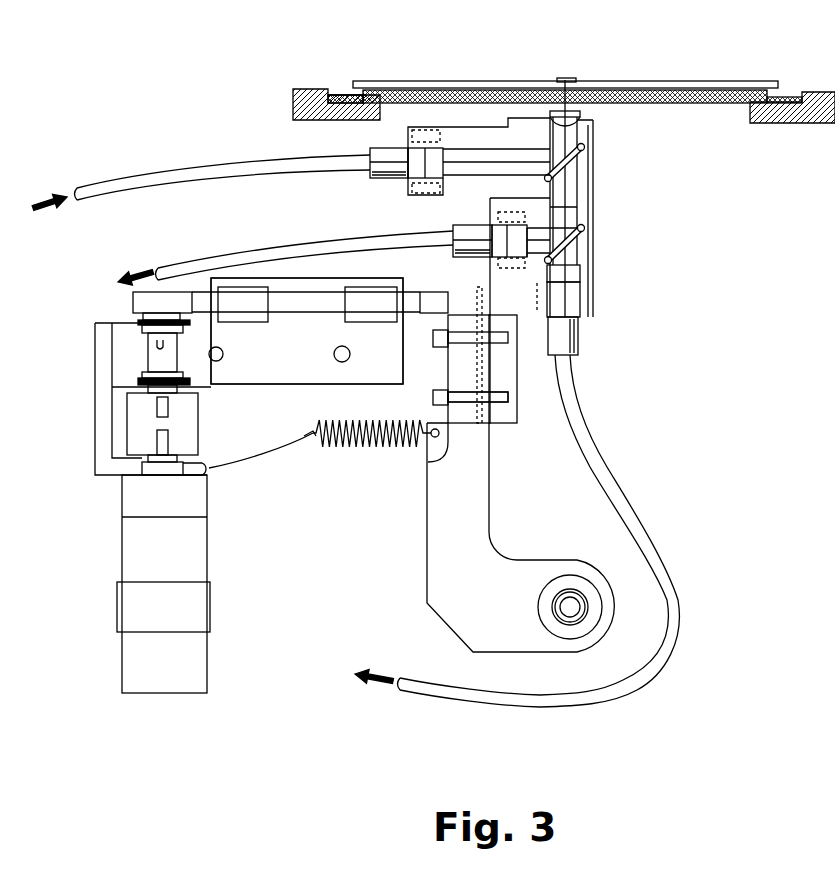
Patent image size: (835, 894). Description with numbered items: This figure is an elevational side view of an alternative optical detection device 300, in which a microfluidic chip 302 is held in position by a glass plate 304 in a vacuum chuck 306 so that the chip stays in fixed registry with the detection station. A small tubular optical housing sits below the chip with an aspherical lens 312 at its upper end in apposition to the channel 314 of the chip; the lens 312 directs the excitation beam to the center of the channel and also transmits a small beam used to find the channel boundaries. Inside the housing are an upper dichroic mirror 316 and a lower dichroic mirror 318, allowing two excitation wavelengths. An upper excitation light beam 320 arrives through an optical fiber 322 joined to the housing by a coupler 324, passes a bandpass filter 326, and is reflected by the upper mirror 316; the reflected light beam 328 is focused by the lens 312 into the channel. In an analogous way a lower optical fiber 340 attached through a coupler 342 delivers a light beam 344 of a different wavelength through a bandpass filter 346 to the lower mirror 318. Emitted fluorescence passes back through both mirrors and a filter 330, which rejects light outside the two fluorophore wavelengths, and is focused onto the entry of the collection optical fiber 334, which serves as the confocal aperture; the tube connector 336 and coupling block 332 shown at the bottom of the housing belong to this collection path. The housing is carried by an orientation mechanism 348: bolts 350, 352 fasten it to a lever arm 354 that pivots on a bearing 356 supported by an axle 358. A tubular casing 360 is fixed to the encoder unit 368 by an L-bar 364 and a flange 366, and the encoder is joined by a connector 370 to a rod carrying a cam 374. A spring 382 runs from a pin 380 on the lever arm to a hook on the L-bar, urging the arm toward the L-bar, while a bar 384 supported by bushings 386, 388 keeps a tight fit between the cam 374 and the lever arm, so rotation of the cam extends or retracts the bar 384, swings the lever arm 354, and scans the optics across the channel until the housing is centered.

The optical detection device 300 is at (703, 393).
The microfluidic chip 302 is at (747, 84).
The glass plate 304 is at (340, 94).
The vacuum chuck 306 is at (292, 114).
The aspherical lens 312 is at (581, 114).
The channel 314 is at (564, 80).
The upper dichroic mirror 316 is at (578, 228).
The lower dichroic mirror 318 is at (574, 158).
The upper excitation light beam 320 is at (527, 300).
The optical fiber 322 is at (268, 247).
The coupler 324 is at (455, 232).
The bandpass filter 326 is at (499, 345).
The reflected light beam 328 is at (575, 138).
The filter 330 is at (582, 270).
The lower coupling block 332 is at (580, 286).
The collection optical fiber 334 is at (560, 702).
The tube connector 336 is at (580, 325).
The lower optical fiber 340 is at (118, 177).
The coupler 342 is at (370, 149).
The light beam 344 is at (497, 174).
The bandpass filter 346 is at (436, 158).
The orientation mechanism 348 is at (288, 524).
The bolt 350 is at (503, 425).
The bolt 352 is at (498, 403).
The lever arm 354 is at (427, 540).
The bearing 356 is at (596, 620).
The axle 358 is at (588, 602).
The tubular casing 360 is at (308, 284).
The L-bar 364 is at (95, 434).
The flange 366 is at (283, 376).
The encoder unit 368 is at (121, 667).
The connector 370 is at (190, 423).
The cam 374 is at (133, 301).
The pin 380 is at (430, 440).
The spring 382 is at (360, 423).
The bar 384 is at (297, 297).
The bushing 386 is at (232, 287).
The bushing 388 is at (363, 288).